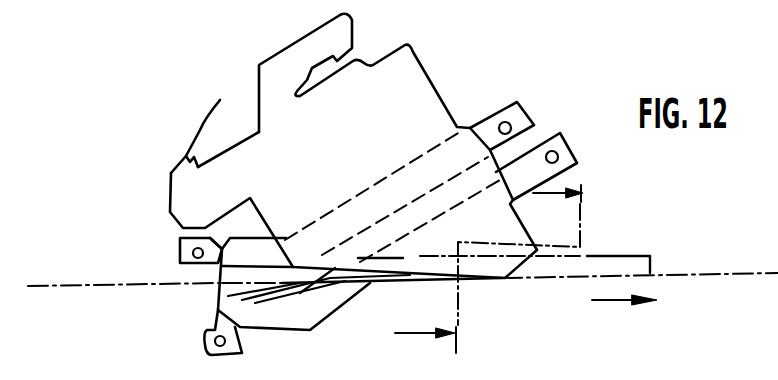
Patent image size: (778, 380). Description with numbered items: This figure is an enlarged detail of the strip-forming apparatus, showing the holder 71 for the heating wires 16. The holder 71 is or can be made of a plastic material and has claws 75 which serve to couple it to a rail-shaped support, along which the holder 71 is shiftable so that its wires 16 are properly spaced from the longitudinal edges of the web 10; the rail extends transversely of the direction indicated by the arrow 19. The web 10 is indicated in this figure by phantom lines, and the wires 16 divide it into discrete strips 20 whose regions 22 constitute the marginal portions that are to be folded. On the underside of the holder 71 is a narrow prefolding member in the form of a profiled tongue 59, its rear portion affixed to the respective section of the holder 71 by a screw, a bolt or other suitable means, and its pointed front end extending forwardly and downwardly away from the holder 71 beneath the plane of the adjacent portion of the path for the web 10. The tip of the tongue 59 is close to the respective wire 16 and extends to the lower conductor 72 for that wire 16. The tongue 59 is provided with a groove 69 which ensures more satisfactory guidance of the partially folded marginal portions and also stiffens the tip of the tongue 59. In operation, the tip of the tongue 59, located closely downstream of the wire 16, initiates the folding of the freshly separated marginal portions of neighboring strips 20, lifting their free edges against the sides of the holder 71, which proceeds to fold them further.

The web 10 is at (57, 283).
The heating wire 16 is at (214, 293).
The arrow 19 is at (617, 301).
The strips 20 is at (737, 272).
The regions of the web 22 is at (652, 264).
The profiled tongue 59 is at (368, 288).
The groove 69 is at (267, 313).
The holder 71 is at (417, 78).
The lower conductor 72 is at (553, 135).
The claws 75 is at (268, 89).